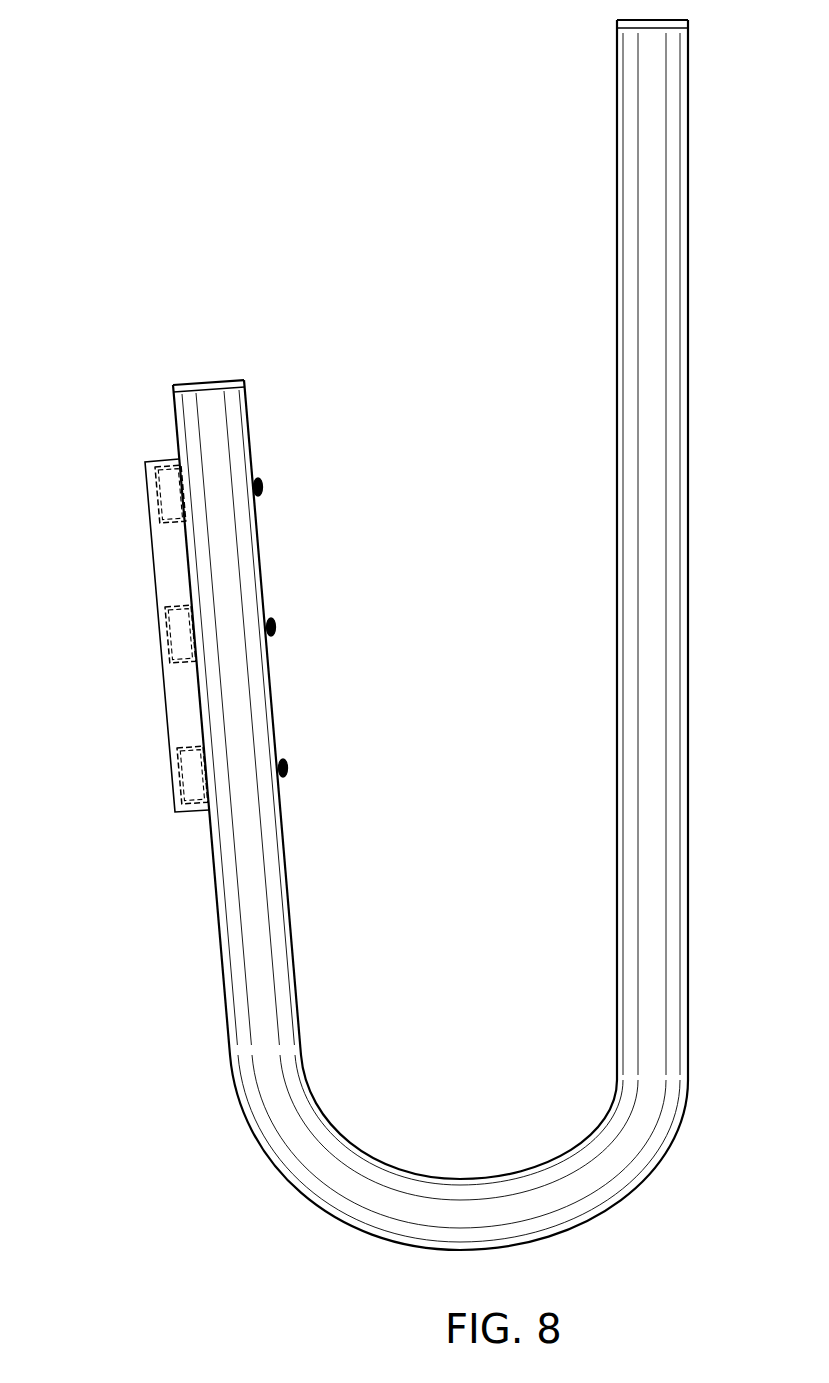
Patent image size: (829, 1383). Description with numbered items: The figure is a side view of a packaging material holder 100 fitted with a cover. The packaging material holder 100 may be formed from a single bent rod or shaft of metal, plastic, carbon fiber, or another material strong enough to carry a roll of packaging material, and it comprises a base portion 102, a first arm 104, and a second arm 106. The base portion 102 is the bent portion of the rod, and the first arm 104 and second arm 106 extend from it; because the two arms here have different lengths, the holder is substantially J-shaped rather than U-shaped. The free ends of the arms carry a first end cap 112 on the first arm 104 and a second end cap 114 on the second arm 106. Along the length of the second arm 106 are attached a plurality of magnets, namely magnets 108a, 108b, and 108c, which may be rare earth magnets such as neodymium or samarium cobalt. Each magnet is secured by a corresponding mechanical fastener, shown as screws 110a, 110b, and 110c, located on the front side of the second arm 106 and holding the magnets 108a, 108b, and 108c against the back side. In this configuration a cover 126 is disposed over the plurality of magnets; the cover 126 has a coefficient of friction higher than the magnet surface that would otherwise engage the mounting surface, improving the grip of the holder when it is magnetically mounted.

The packaging material holder 100 is at (134, 141).
The base portion 102 is at (268, 1160).
The first arm 104 is at (689, 277).
The second arm 106 is at (227, 1013).
The magnet 108a is at (156, 497).
The magnet 108b is at (167, 634).
The magnet 108c is at (179, 774).
The screw 110a is at (262, 484).
The screw 110b is at (275, 624).
The screw 110c is at (287, 765).
The first end cap 112 is at (689, 22).
The second end cap 114 is at (173, 392).
The cover 126 is at (140, 578).